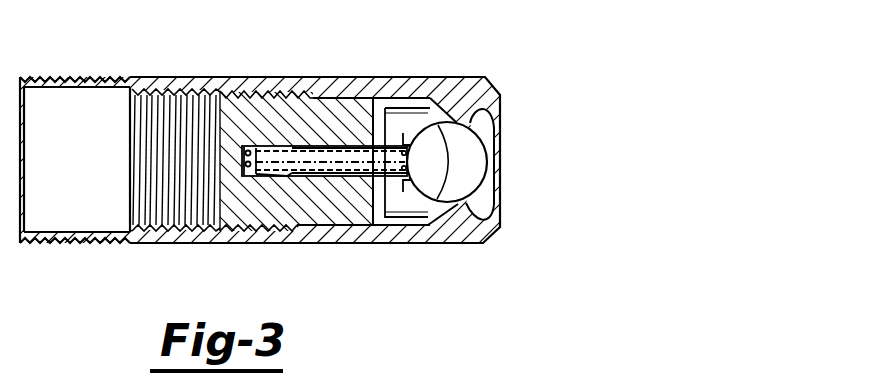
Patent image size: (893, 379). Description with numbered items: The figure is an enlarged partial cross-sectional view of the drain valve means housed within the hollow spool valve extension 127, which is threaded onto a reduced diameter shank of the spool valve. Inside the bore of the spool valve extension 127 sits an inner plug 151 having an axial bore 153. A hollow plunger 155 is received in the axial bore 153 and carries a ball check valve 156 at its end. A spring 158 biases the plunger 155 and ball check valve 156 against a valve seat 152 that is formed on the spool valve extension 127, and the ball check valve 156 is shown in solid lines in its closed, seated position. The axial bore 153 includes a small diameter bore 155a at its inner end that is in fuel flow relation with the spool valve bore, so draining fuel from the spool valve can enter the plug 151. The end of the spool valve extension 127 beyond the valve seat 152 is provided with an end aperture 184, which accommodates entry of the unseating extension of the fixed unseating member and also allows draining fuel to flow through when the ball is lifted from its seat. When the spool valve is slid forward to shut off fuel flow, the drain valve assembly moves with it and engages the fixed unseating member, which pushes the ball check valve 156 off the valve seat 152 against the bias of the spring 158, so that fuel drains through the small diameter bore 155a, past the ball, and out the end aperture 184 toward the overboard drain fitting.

The hollow spool valve extension 127 is at (477, 93).
The inner plug 151 is at (243, 113).
The valve seat 152 is at (466, 205).
The axial bore 153 is at (258, 150).
The hollow plunger 155 is at (342, 146).
The small diameter bore 155a is at (243, 158).
The ball check valve 156 is at (462, 171).
The spring 158 is at (250, 178).
The end aperture 184 is at (500, 134).